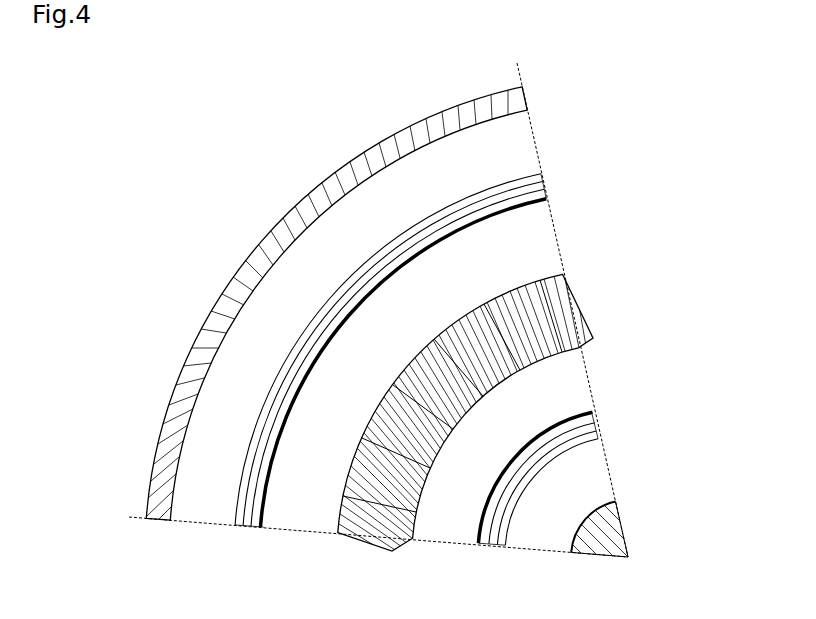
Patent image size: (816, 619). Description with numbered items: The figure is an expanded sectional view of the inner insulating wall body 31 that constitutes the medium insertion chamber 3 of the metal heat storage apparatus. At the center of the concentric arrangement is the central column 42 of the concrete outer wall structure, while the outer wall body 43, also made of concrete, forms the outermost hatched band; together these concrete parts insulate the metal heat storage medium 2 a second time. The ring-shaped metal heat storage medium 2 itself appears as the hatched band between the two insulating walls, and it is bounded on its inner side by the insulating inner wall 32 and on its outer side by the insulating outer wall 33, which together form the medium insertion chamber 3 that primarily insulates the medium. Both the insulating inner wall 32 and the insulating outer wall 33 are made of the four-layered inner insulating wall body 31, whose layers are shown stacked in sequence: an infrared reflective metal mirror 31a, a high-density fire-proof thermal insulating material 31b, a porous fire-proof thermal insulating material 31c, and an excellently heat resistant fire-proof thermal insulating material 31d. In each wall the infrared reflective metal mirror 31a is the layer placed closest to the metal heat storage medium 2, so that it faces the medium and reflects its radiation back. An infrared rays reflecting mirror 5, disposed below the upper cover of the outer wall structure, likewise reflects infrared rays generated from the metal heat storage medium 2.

The metal heat storage medium 2 is at (458, 503).
The medium insertion chamber 3 is at (301, 505).
The infrared rays reflecting mirror 5 is at (571, 534).
The inner insulating wall body 31 is at (453, 346).
The infrared reflective metal mirror 31a is at (534, 207).
The high-density fire-proof thermal insulating material 31b is at (545, 192).
The porous fire-proof thermal insulating material 31c is at (544, 184).
The excellently heat resistant fire-proof thermal insulating material 31d is at (542, 176).
The insulating inner wall 32 is at (604, 370).
The insulating outer wall 33 is at (550, 238).
The central column 42 is at (620, 536).
The outer wall body 43 is at (328, 180).